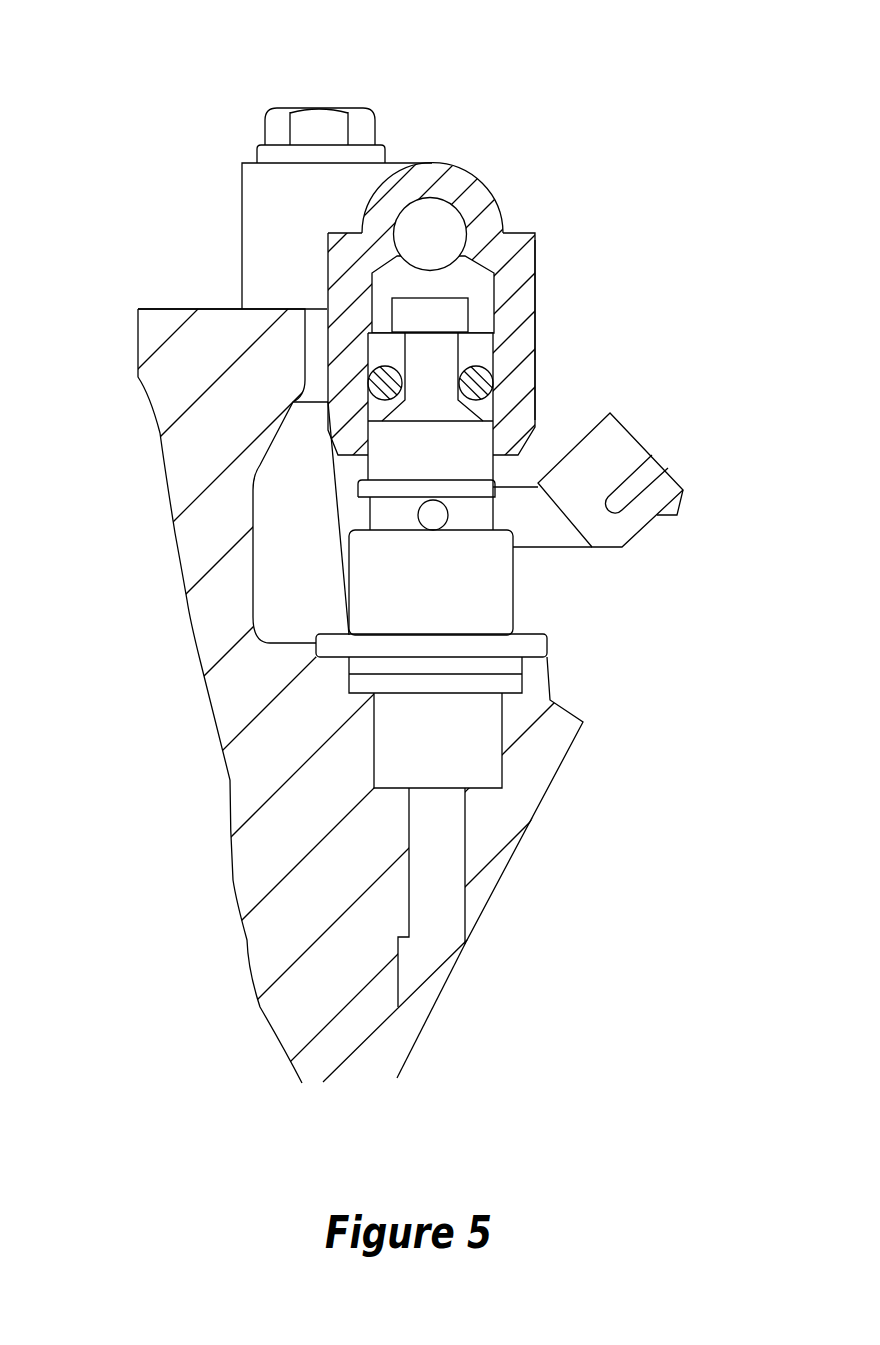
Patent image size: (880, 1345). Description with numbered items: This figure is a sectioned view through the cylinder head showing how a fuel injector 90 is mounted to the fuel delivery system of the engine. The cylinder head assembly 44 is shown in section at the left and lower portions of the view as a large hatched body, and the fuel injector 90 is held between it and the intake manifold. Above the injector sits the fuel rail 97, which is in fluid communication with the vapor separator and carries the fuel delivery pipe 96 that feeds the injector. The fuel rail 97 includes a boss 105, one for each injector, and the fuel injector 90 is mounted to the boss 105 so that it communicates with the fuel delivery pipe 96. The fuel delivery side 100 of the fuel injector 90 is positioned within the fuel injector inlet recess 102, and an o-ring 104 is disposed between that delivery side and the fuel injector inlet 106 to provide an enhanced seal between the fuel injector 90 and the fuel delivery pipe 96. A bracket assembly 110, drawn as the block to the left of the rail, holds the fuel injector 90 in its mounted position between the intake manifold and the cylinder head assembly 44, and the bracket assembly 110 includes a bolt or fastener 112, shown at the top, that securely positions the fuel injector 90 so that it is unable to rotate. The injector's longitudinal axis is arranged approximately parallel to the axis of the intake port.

The cylinder head assembly 44 is at (231, 876).
The fuel injector 90 is at (493, 599).
The fuel delivery pipe 96 is at (457, 183).
The fuel rail 97 is at (537, 372).
The fuel delivery side 100 is at (497, 316).
The fuel injector inlet recess 102 is at (452, 313).
The o-ring 104 is at (460, 355).
The boss 105 is at (535, 303).
The fuel injector inlet 106 is at (427, 347).
The bracket assembly 110 is at (270, 227).
The bolt or fastener 112 is at (317, 125).